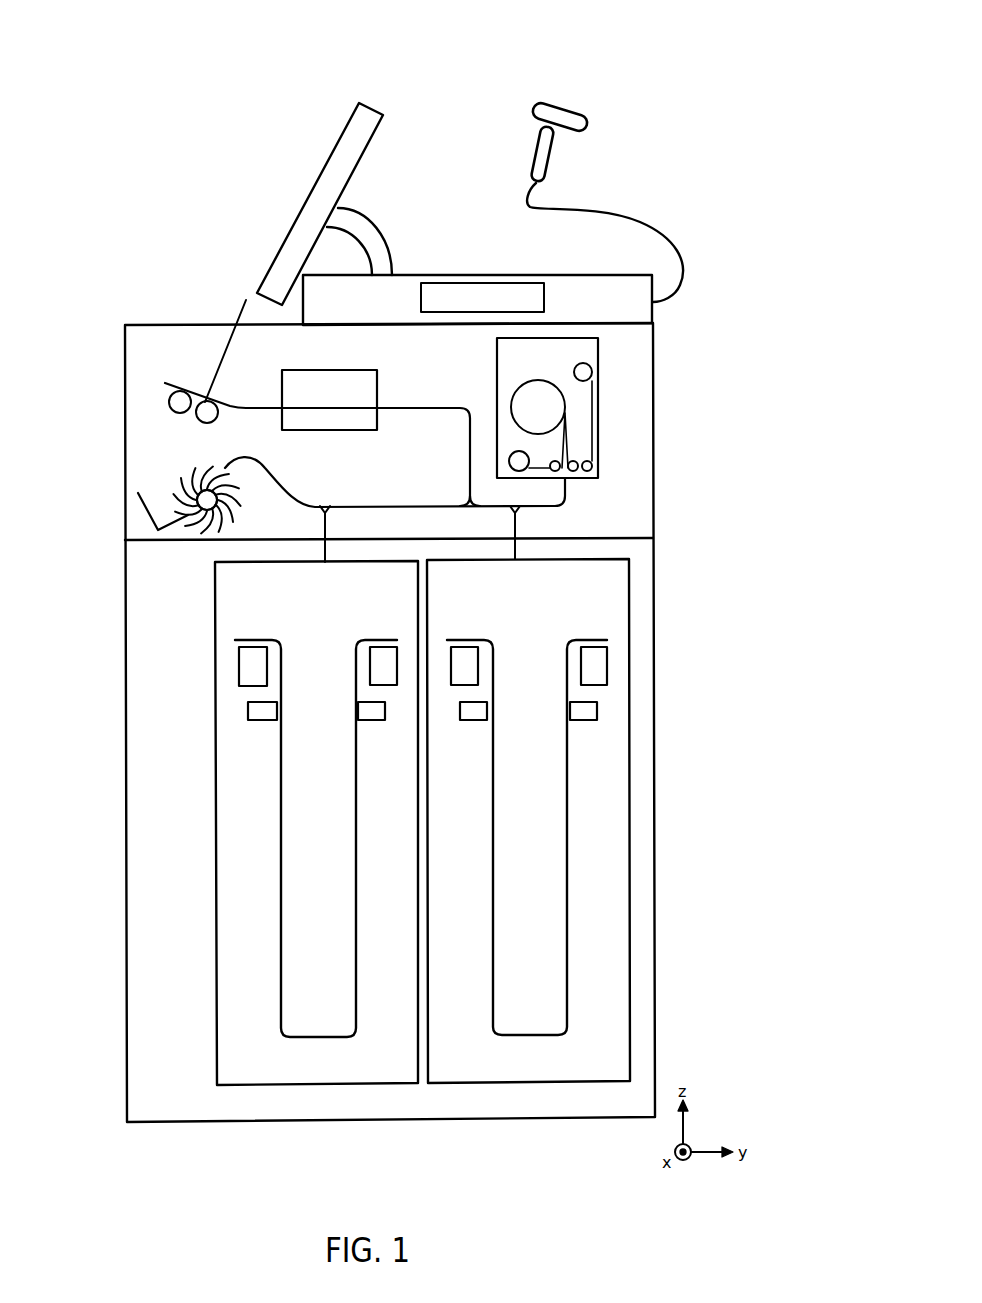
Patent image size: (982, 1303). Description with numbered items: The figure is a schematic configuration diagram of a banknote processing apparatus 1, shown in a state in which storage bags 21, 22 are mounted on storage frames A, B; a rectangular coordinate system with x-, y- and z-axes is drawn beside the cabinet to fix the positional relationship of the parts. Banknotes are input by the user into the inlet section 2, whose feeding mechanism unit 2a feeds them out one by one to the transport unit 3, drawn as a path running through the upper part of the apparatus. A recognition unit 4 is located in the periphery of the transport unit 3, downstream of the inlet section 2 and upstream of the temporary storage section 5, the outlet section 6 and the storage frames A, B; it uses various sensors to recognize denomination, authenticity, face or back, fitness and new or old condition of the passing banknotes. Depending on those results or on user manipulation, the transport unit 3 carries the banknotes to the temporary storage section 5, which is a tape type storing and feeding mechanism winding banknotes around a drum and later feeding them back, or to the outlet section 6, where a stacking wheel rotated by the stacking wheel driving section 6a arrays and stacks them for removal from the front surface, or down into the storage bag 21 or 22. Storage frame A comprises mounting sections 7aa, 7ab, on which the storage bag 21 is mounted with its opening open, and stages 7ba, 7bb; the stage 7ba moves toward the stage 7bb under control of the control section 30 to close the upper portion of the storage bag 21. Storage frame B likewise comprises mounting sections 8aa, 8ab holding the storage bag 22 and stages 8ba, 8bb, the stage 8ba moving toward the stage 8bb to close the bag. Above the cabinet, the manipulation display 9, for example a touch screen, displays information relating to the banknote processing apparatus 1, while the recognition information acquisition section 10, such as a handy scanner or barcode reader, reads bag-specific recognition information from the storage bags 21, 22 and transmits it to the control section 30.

The banknote processing apparatus 1 is at (392, 63).
The inlet section 2 is at (182, 360).
The feeding mechanism unit 2a is at (168, 390).
The transport unit 3 is at (252, 407).
The recognition unit 4 is at (292, 369).
The temporary storage section 5 is at (557, 338).
The outlet section 6 is at (160, 484).
The stacking wheel driving section 6a is at (207, 510).
The mounting section 7aa is at (239, 665).
The mounting section 7ab is at (370, 663).
The stage 7ba is at (248, 712).
The stage 7bb is at (355, 722).
The mounting section 8aa is at (478, 662).
The mounting section 8ab is at (607, 662).
The stage 8ba is at (478, 720).
The stage 8bb is at (597, 708).
The manipulation display 9 is at (314, 183).
The recognition information acquisition section 10 is at (563, 107).
The storage bag 21 is at (281, 958).
The storage bag 22 is at (567, 957).
The control section 30 is at (478, 283).
The storage frame A is at (215, 590).
The storage frame B is at (630, 575).